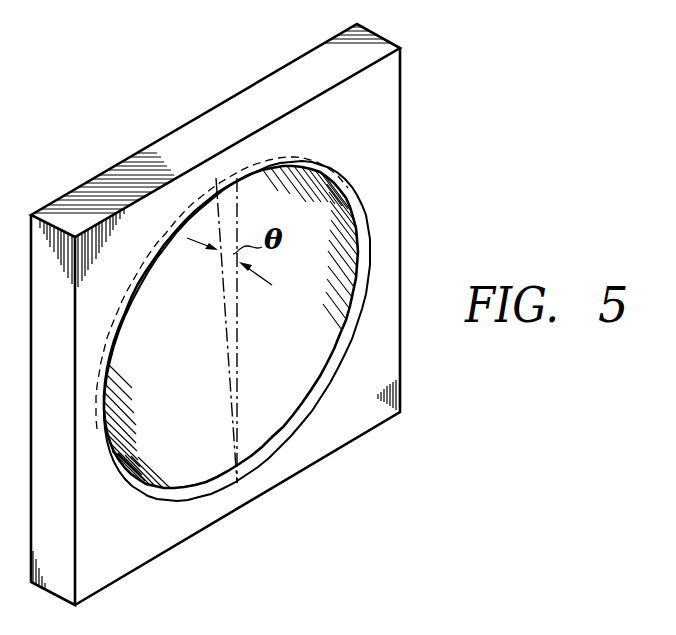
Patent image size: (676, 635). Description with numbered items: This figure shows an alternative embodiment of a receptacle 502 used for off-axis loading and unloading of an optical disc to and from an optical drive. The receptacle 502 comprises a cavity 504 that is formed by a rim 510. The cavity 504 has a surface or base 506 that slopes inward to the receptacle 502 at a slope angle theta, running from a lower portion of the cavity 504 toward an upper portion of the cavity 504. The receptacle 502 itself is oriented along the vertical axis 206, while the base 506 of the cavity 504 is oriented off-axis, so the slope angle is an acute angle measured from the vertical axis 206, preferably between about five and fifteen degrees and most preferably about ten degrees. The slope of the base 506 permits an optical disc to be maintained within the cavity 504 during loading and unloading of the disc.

The receptacle 502 is at (120, 552).
The cavity 504 is at (308, 435).
The base 506 is at (300, 385).
The rim 510 is at (348, 202).
The vertical axis 206 is at (237, 211).